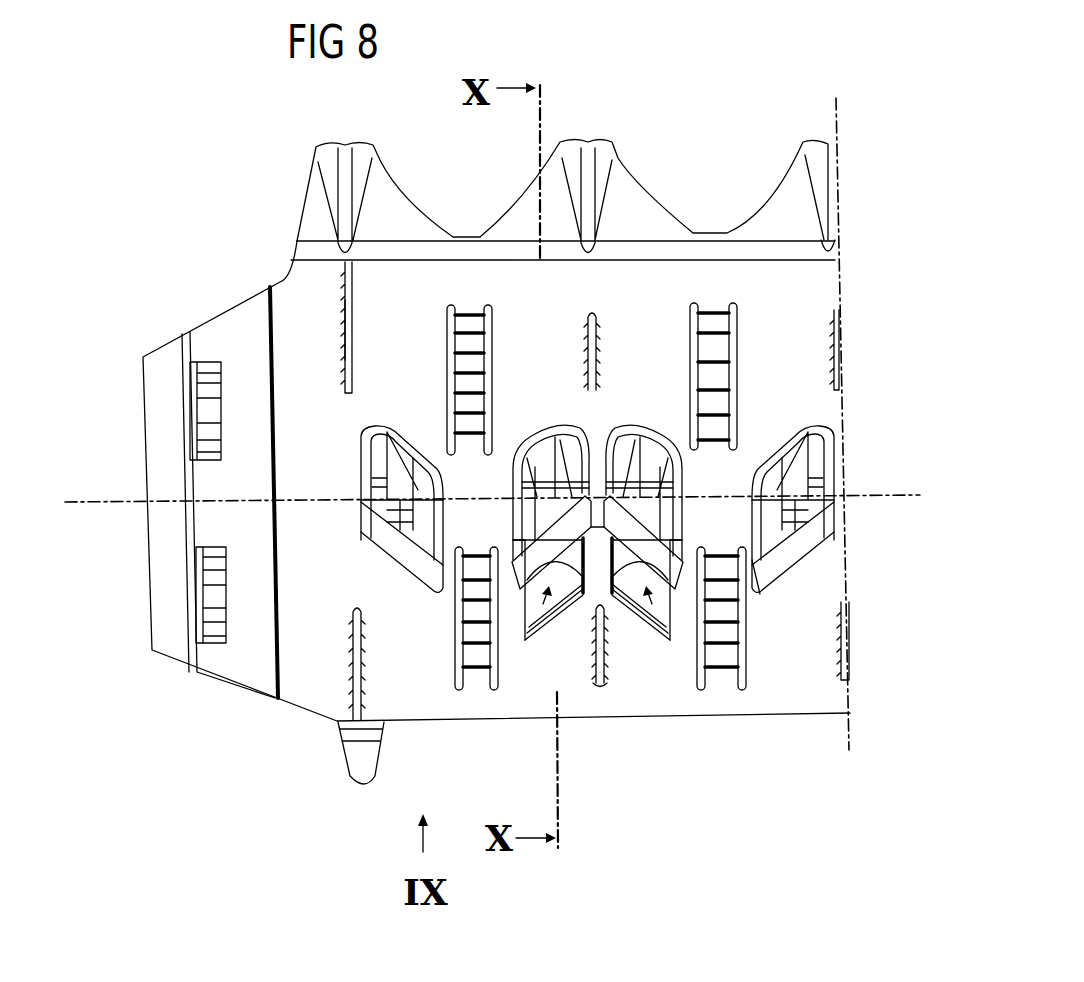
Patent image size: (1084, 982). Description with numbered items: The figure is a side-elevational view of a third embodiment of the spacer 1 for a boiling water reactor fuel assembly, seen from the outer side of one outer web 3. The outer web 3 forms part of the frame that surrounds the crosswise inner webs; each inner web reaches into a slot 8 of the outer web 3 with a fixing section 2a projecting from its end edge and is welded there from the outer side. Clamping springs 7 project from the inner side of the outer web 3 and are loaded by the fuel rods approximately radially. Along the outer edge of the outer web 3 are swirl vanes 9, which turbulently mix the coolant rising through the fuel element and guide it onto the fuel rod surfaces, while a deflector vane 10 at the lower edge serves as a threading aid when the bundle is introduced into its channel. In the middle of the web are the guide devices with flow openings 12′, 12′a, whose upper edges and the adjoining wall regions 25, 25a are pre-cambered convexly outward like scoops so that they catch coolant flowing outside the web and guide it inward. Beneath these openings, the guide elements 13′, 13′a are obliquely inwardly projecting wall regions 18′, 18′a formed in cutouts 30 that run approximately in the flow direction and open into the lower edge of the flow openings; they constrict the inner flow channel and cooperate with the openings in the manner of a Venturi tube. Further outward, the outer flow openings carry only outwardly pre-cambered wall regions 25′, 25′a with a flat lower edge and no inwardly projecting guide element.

The spacer 1 is at (762, 768).
The fixing section 2a is at (345, 340).
The outer web 3 is at (820, 565).
The clamping spring 7 is at (468, 370).
The slot 8 is at (356, 313).
The swirl vane 9 is at (605, 157).
The deflector vane 10 is at (362, 760).
The flow opening 12′ is at (572, 522).
The flow opening 12′a is at (624, 522).
The guide element 13′ is at (560, 577).
The guide element 13′a is at (660, 580).
The wall region 18′ is at (577, 578).
The wall region 18′a is at (640, 577).
The wall region 25 is at (566, 464).
The wall region 25′ is at (406, 475).
The wall region 25′a is at (810, 462).
The wall region 25a is at (604, 331).
The cutout 30 is at (528, 606).